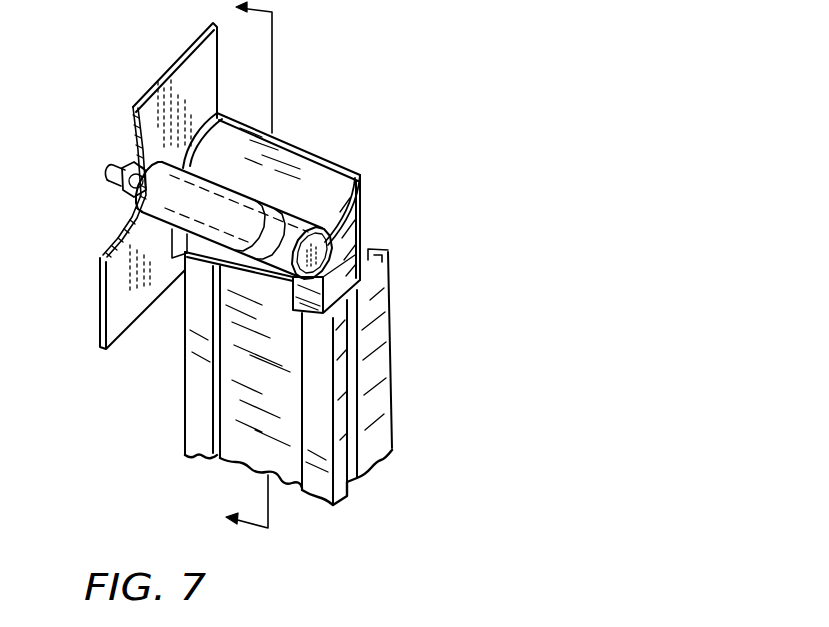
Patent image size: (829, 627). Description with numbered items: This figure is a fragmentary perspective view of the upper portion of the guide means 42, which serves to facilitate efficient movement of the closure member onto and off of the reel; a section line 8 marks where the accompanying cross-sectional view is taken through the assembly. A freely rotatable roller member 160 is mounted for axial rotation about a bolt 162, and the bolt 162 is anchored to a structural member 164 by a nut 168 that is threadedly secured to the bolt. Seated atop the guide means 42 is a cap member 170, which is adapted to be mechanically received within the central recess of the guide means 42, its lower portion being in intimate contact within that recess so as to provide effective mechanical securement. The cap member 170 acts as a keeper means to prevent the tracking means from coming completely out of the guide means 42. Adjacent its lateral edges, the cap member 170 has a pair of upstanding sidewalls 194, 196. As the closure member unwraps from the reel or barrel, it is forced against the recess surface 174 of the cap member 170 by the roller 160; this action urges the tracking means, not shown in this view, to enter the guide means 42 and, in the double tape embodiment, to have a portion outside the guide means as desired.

The guide means 42 is at (398, 349).
The roller member 160 is at (220, 235).
The bolt 162 is at (284, 247).
The structural member 164 is at (161, 92).
The nut 168 is at (122, 198).
The cap member 170 is at (352, 158).
The recess surface 174 is at (302, 160).
The upstanding sidewall 194 is at (199, 130).
The upstanding sidewall 196 is at (342, 214).
The section line 8- 8 is at (238, 264).